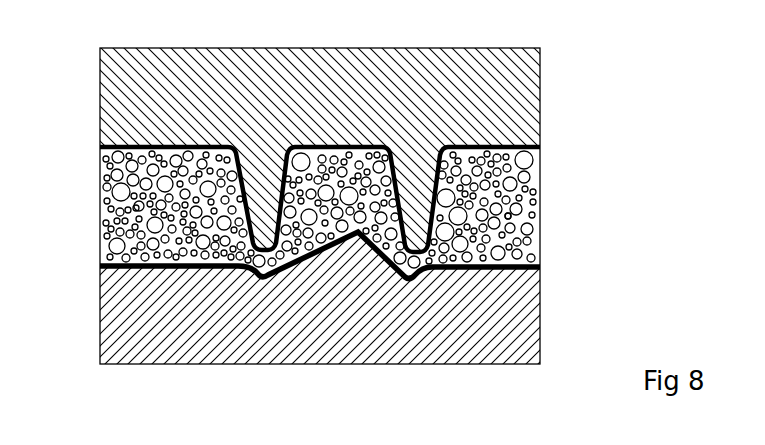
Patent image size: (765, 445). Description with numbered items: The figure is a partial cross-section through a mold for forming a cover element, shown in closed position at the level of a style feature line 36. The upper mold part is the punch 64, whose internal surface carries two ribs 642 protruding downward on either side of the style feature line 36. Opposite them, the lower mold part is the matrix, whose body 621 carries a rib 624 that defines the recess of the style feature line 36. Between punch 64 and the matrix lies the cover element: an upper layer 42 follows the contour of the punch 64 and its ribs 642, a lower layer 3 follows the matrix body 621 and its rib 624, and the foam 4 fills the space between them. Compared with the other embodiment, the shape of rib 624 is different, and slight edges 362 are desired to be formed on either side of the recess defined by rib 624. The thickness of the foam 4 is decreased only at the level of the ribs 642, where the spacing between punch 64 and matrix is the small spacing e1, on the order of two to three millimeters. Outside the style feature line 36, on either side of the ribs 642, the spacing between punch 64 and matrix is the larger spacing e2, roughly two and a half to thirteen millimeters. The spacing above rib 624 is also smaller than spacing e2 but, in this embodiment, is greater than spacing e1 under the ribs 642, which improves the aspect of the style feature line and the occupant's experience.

The style feature line 36 is at (345, 205).
The punch 64 is at (512, 92).
The decorative layer of cover element 42 is at (100, 147).
The foam 4 is at (142, 200).
The ribs 642 is at (135, 209).
The carrier layer of cover element 3 is at (100, 266).
The matrix body 621 is at (503, 322).
The slight edges 362 is at (253, 275).
The rib of matrix 624 is at (352, 241).
The spacing e1 is at (288, 268).
The spacing e2 is at (542, 147).